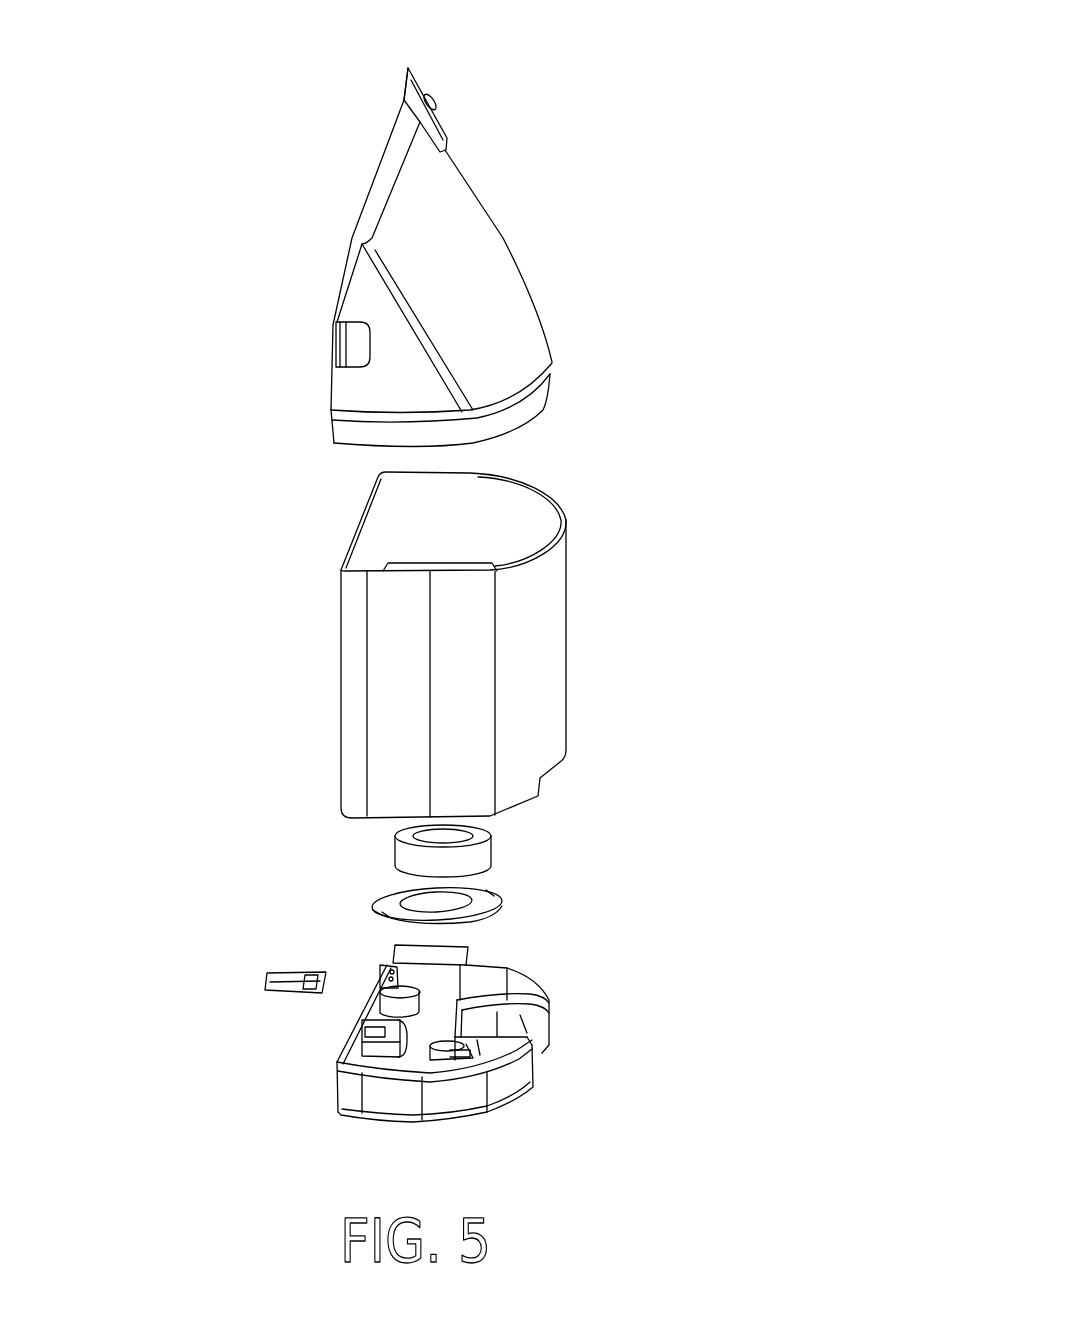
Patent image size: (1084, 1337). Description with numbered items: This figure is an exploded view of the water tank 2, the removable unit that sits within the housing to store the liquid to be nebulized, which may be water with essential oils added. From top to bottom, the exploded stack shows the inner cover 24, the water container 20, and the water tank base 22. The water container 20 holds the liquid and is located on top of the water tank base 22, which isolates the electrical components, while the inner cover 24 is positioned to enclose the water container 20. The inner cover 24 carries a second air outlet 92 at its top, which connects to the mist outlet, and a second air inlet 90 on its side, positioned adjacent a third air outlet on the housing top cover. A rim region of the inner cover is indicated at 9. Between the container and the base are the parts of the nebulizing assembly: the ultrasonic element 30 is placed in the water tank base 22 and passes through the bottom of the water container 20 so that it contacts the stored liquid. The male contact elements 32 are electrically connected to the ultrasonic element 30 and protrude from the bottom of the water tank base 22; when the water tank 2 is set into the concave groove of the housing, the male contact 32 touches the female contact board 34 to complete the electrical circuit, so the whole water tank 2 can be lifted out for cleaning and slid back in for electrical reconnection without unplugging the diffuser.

The water tank 2 is at (778, 1098).
The hood rim 9 is at (527, 426).
The water container 20 is at (520, 665).
The water tank base 22 is at (543, 992).
The inner cover 24 is at (483, 292).
The ultrasonic element 30 is at (477, 860).
The male contact elements 32 is at (387, 965).
The female contact board 34 is at (263, 976).
The second air inlet 90 is at (362, 350).
The second air outlet 92 is at (430, 85).